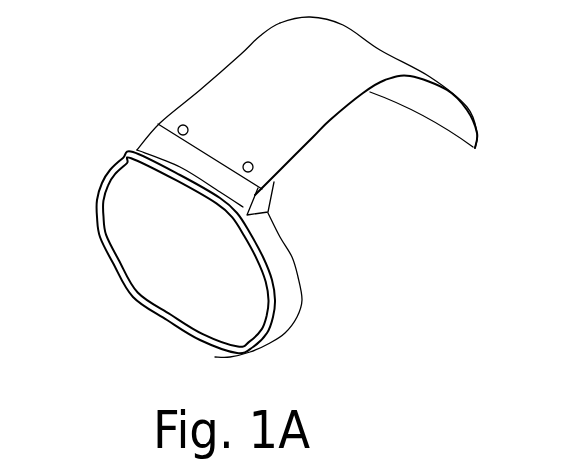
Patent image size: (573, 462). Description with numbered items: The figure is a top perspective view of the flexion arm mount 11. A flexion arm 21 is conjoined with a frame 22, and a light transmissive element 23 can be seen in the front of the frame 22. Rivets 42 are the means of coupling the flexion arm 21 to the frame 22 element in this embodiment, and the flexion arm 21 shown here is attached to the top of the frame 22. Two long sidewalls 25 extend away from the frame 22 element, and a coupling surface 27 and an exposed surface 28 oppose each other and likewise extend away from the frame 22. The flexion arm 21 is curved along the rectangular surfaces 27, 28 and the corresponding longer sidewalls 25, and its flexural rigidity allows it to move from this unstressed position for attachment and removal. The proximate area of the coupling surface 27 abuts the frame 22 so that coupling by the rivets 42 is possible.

The flexion arm mount 11 is at (177, 90).
The flexion arm 21 is at (280, 160).
The frame 22 is at (285, 281).
The light transmissive element 23 is at (178, 300).
The long sidewalls 25 is at (333, 120).
The coupling surface 27 is at (447, 112).
The exposed surface 28 is at (280, 85).
The rivets 42 is at (160, 131).